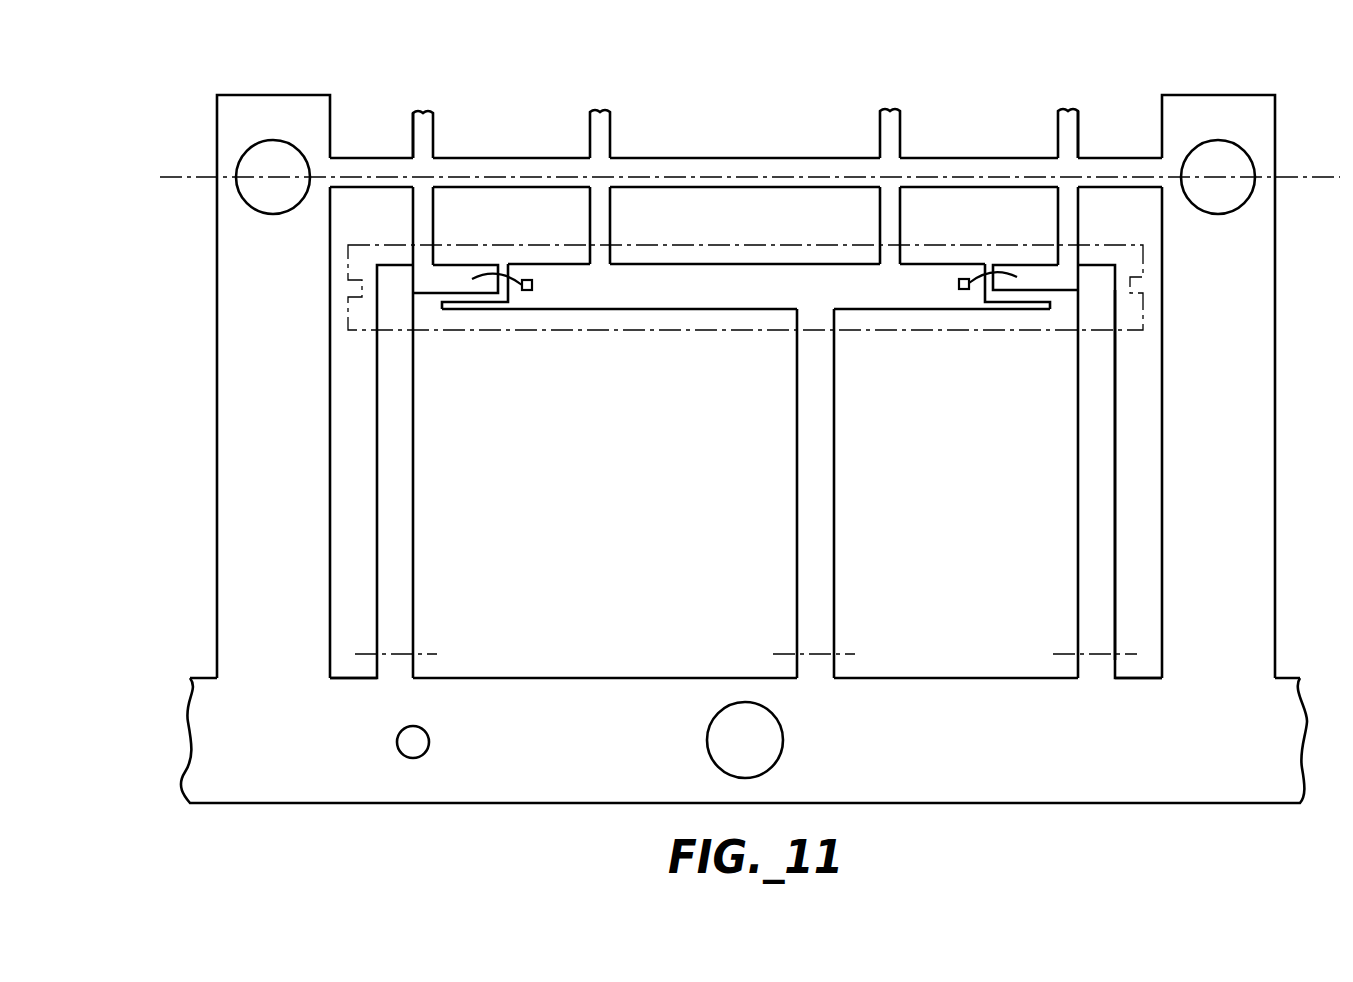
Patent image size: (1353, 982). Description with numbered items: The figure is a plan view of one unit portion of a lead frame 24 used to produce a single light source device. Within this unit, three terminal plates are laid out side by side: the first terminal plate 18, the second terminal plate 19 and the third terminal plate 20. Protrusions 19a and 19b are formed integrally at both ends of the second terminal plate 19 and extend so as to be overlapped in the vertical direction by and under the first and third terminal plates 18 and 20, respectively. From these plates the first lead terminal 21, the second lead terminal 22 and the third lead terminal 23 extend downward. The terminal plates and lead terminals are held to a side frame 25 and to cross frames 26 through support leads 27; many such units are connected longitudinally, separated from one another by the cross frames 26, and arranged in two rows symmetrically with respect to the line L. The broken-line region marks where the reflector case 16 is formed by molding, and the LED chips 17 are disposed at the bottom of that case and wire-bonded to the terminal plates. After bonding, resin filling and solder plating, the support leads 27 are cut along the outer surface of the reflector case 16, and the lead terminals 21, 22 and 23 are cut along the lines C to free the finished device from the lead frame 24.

The reflector case 16 is at (697, 243).
The LED chip 17 is at (527, 280).
The first terminal plate 18 is at (445, 276).
The second terminal plate 19 is at (646, 288).
The protrusion 19a is at (462, 306).
The protrusion 19b is at (1002, 304).
The third terminal plate 20 is at (1067, 274).
The first lead terminal 21 is at (403, 485).
The second lead terminal 22 is at (822, 482).
The third lead terminal 23 is at (1090, 485).
The lead frame 24 is at (975, 98).
The side frame 25 is at (538, 765).
The cross frame 26 is at (232, 427).
The support lead 27 is at (412, 220).
The line of symmetry L is at (205, 175).
The cutting line C is at (398, 656).